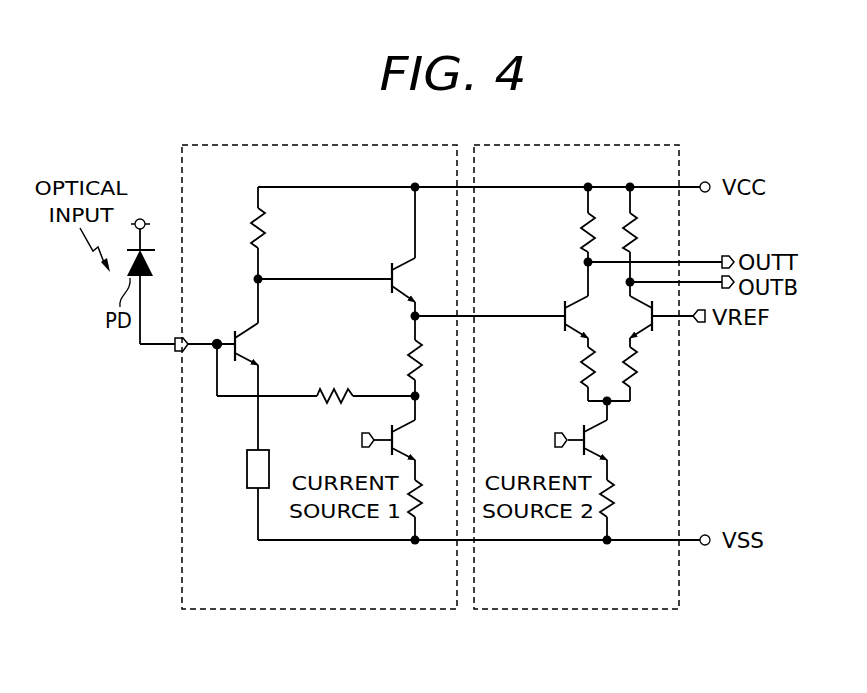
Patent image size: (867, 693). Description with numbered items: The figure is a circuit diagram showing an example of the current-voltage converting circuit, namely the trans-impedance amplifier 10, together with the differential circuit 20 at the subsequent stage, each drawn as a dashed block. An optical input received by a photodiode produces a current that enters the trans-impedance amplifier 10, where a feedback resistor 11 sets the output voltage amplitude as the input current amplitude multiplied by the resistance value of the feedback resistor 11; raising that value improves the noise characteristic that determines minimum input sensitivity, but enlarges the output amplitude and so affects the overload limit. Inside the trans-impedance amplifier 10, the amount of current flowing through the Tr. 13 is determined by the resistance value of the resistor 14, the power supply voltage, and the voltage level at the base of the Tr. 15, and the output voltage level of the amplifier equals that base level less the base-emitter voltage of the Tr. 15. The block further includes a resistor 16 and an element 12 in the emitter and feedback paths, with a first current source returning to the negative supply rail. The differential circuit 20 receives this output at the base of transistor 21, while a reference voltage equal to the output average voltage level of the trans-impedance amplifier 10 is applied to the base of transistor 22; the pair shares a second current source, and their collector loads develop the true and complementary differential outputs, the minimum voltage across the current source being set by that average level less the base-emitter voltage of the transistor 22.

The trans-impedance amplifier 10 is at (257, 611).
The feedback resistor 11 is at (318, 386).
The feedback resistor block 12 is at (271, 466).
The Tr. 13 is at (234, 333).
The resistor 14 is at (266, 224).
The Tr. 15 is at (389, 267).
The resistor 16 is at (410, 351).
The differential circuit 20 is at (540, 611).
The differential transistor 21 is at (563, 305).
The transistor 22 is at (653, 332).